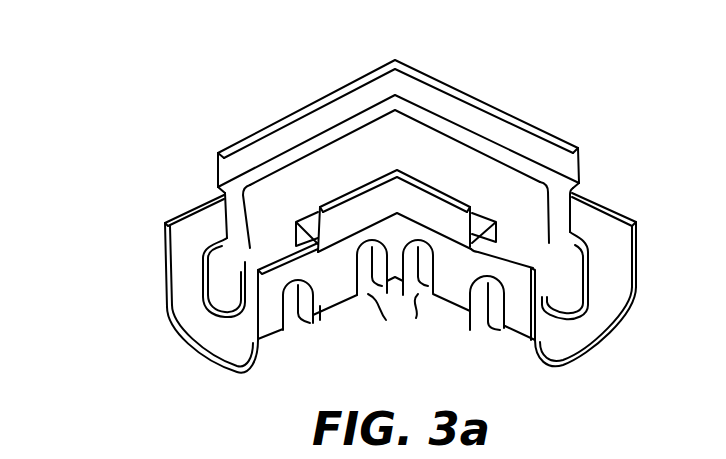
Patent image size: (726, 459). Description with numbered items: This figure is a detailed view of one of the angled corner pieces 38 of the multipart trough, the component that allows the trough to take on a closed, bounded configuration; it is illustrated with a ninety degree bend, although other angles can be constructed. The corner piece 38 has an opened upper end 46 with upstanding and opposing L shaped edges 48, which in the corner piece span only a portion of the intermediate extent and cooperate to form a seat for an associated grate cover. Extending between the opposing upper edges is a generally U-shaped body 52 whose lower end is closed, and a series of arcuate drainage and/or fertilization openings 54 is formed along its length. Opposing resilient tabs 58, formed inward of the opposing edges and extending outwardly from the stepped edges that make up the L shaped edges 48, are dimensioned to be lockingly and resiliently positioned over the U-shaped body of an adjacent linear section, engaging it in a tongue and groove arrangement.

The angled corner piece 38 is at (567, 112).
The opened upper end 46 is at (201, 174).
The L shaped edges 48 is at (217, 156).
The U-shaped body 52 is at (636, 227).
The arcuate drainage and/or fertilization openings 54 is at (474, 318).
The resilient tabs 58 is at (182, 283).